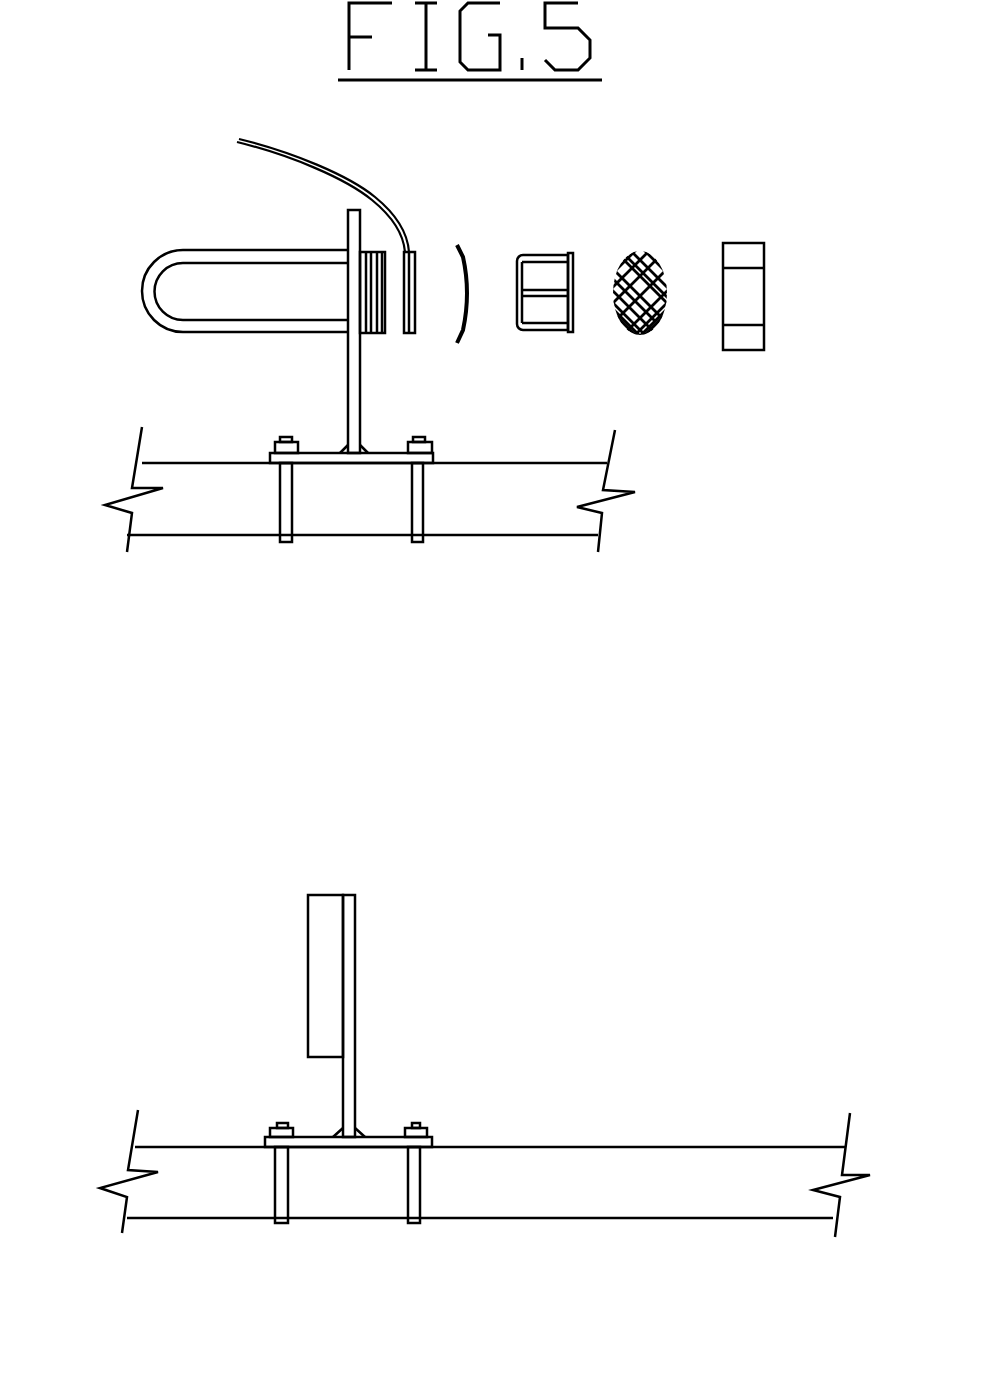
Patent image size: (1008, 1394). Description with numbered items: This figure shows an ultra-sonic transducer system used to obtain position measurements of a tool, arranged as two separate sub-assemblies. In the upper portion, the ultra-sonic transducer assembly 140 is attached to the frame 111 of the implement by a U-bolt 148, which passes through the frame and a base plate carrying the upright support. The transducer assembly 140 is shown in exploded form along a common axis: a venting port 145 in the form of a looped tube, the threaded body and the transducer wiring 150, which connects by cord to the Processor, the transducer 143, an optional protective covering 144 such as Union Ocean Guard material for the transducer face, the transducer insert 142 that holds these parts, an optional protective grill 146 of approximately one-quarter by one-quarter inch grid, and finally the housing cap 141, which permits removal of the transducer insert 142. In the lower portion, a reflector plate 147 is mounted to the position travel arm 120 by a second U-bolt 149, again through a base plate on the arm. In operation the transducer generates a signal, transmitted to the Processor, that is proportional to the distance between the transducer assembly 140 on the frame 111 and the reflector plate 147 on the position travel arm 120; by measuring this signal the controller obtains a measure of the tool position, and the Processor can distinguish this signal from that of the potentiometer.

The Ultra-Sonic transducer assembly 140 is at (464, 359).
The venting port 145 is at (230, 261).
The transducer wiring 150 is at (347, 192).
The transducer 143 is at (453, 254).
The protective covering 144 is at (506, 272).
The transducer insert 142 is at (593, 232).
The protective grill 146 is at (655, 256).
The housing cap 141 is at (788, 253).
The U-bolt 148 is at (445, 462).
The frame 111 is at (370, 522).
The reflector plate 147 is at (394, 1011).
The U-bolt 149 is at (470, 1127).
The position travel arm 120 is at (485, 1214).